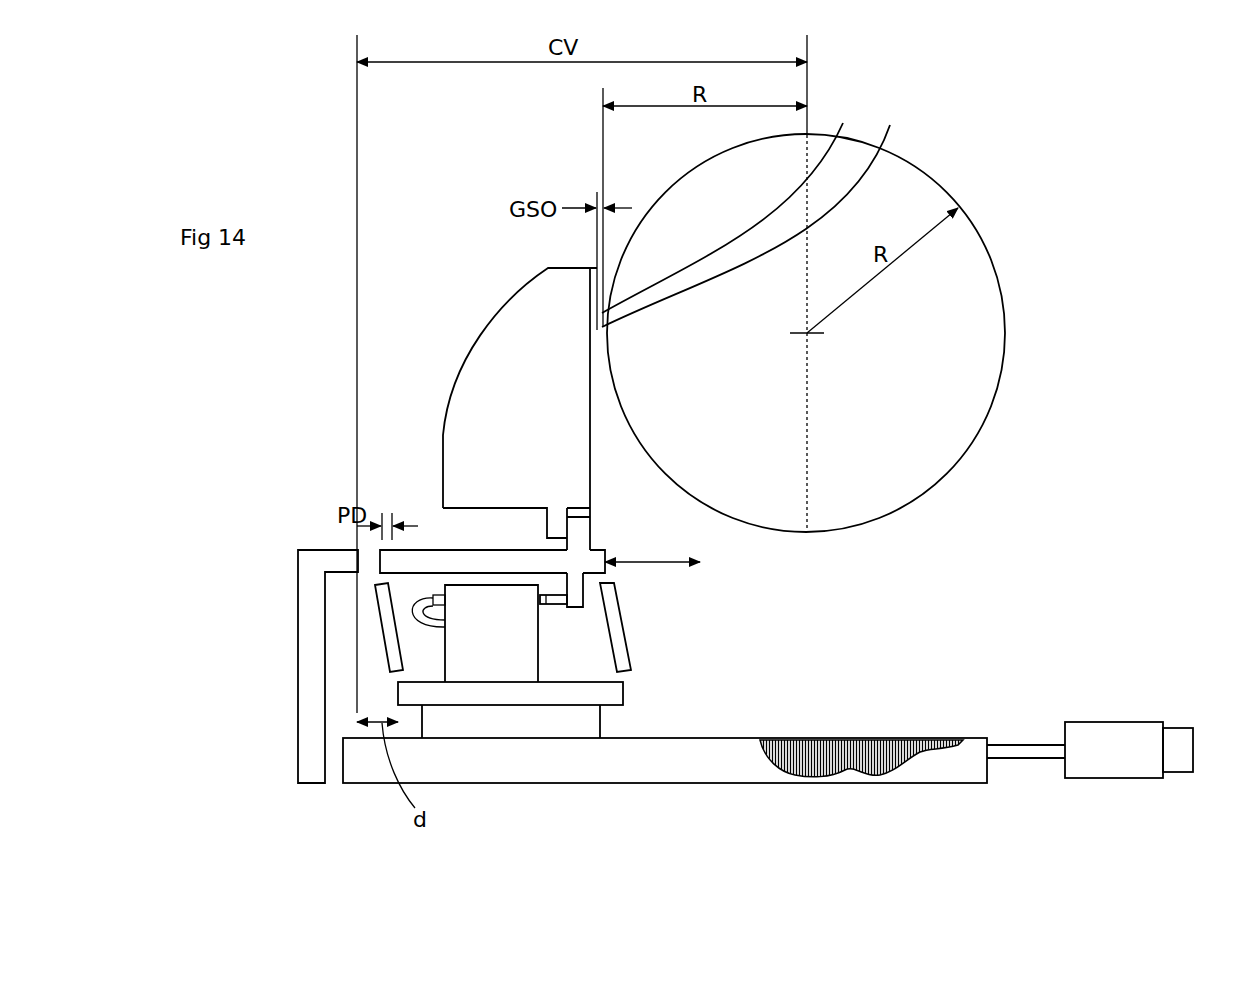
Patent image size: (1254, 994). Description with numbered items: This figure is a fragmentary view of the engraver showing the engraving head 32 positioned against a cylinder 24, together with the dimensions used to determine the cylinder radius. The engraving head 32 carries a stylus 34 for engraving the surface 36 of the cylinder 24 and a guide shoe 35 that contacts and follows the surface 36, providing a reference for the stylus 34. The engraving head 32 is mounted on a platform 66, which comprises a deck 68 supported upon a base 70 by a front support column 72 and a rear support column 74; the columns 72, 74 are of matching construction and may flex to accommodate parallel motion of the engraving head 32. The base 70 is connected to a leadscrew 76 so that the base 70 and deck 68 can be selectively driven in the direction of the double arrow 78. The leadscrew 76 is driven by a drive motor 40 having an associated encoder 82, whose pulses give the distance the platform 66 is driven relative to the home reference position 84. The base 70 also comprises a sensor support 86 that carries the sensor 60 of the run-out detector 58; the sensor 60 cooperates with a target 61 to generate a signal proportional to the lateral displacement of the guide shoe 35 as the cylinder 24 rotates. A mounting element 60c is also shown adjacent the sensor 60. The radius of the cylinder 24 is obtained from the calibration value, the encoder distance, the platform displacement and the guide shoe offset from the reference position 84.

The cylinder 24 is at (861, 284).
The engraving head 32 is at (500, 340).
The stylus 34 is at (729, 204).
The guide shoe 35 is at (756, 211).
The surface 36 is at (1002, 377).
The drive motor 40 is at (1120, 745).
The run-out detector 58 is at (400, 345).
The sensor 60 is at (555, 625).
The stem 60c is at (553, 597).
The target 61 is at (577, 612).
The platform 66 is at (322, 597).
The deck 68 is at (477, 550).
The base 70 is at (608, 695).
The front support column 72 is at (612, 606).
The rear support column 74 is at (385, 632).
The leadscrew 76 is at (903, 740).
The double arrow 78 is at (658, 560).
The encoder 82 is at (1180, 742).
The home reference position 84 is at (353, 560).
The sensor support 86 is at (480, 690).